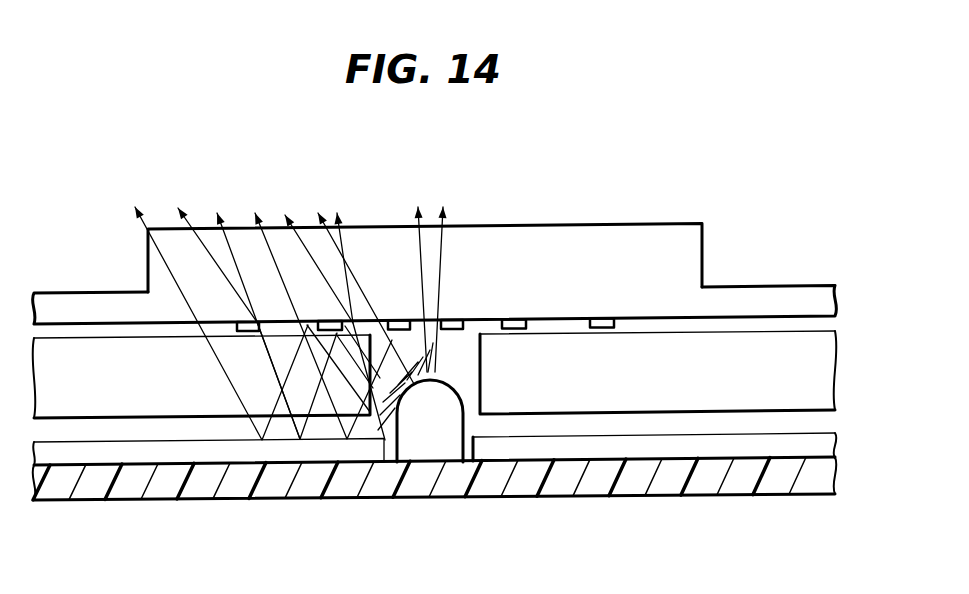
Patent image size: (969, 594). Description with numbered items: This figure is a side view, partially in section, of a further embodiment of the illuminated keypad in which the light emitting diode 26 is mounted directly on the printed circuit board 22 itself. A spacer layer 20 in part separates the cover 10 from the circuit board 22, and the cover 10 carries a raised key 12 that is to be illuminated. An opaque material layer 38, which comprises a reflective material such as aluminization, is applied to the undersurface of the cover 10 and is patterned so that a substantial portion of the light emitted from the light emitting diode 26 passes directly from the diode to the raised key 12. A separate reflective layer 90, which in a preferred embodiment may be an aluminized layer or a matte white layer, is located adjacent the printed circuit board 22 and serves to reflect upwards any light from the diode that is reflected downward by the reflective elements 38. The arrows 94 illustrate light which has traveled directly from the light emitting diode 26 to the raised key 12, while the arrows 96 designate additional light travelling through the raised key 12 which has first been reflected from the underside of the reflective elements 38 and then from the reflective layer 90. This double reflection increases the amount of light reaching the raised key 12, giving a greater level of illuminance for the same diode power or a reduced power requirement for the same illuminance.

The cover 10 is at (745, 287).
The raised key 12 is at (662, 222).
The spacer layer 20 is at (810, 370).
The circuit board 22 is at (690, 483).
The light emitting diode 26 is at (444, 449).
The opaque material layer 38 is at (600, 322).
The reflective layer 90 is at (163, 438).
The arrows 94 is at (179, 206).
The arrows 96 is at (134, 209).